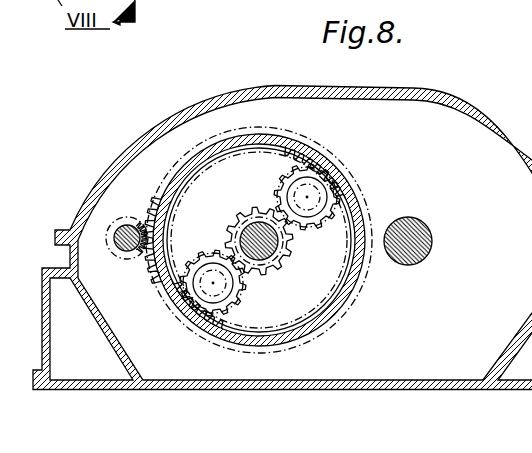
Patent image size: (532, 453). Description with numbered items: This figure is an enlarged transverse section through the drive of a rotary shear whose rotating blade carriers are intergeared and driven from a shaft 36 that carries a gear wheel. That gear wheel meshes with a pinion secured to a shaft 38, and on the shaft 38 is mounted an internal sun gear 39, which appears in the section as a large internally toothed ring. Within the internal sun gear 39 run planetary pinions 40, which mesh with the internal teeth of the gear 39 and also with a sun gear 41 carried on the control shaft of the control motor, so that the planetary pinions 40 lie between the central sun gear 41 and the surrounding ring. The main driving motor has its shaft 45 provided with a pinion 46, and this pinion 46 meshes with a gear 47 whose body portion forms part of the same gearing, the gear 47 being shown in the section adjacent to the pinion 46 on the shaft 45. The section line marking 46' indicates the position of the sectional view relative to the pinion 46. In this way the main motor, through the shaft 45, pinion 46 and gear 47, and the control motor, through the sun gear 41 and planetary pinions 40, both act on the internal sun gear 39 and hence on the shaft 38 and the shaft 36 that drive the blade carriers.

The shaft 36 is at (424, 241).
The shaft 38 is at (268, 246).
The internal sun gear 39 is at (345, 191).
The planetary pinions 40 is at (334, 173).
The sun gear 41 is at (260, 207).
The shaft 45 is at (130, 218).
The pinion 46 is at (122, 263).
The pinion shaft section 46' is at (37, 11).
The gear 47 is at (152, 280).